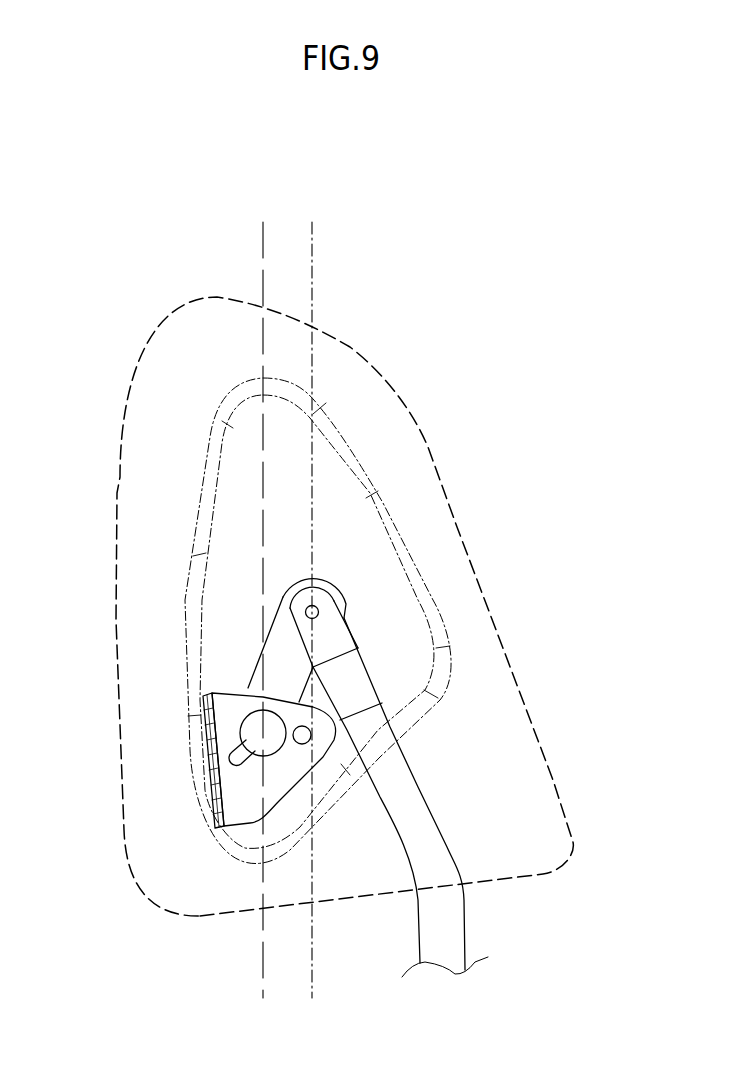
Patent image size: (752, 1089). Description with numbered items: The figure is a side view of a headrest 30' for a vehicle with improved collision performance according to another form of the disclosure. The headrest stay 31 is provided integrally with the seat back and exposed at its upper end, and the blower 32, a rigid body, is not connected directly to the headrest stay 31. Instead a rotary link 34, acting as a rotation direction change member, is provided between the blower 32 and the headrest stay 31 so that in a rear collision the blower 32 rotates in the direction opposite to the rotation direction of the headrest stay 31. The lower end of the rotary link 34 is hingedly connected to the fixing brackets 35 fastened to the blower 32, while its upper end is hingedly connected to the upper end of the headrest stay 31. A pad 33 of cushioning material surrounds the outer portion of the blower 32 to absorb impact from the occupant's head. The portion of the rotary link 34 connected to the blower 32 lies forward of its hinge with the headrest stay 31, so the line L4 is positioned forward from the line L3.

The headrest 30' is at (346, 585).
The headrest stay 31 is at (448, 923).
The blower 32 is at (412, 552).
The pad 33 is at (427, 437).
The rotary link 34 is at (262, 647).
The fixing brackets 35 is at (242, 785).
The line L3- L3 is at (315, 613).
The line L4- L4 is at (267, 613).